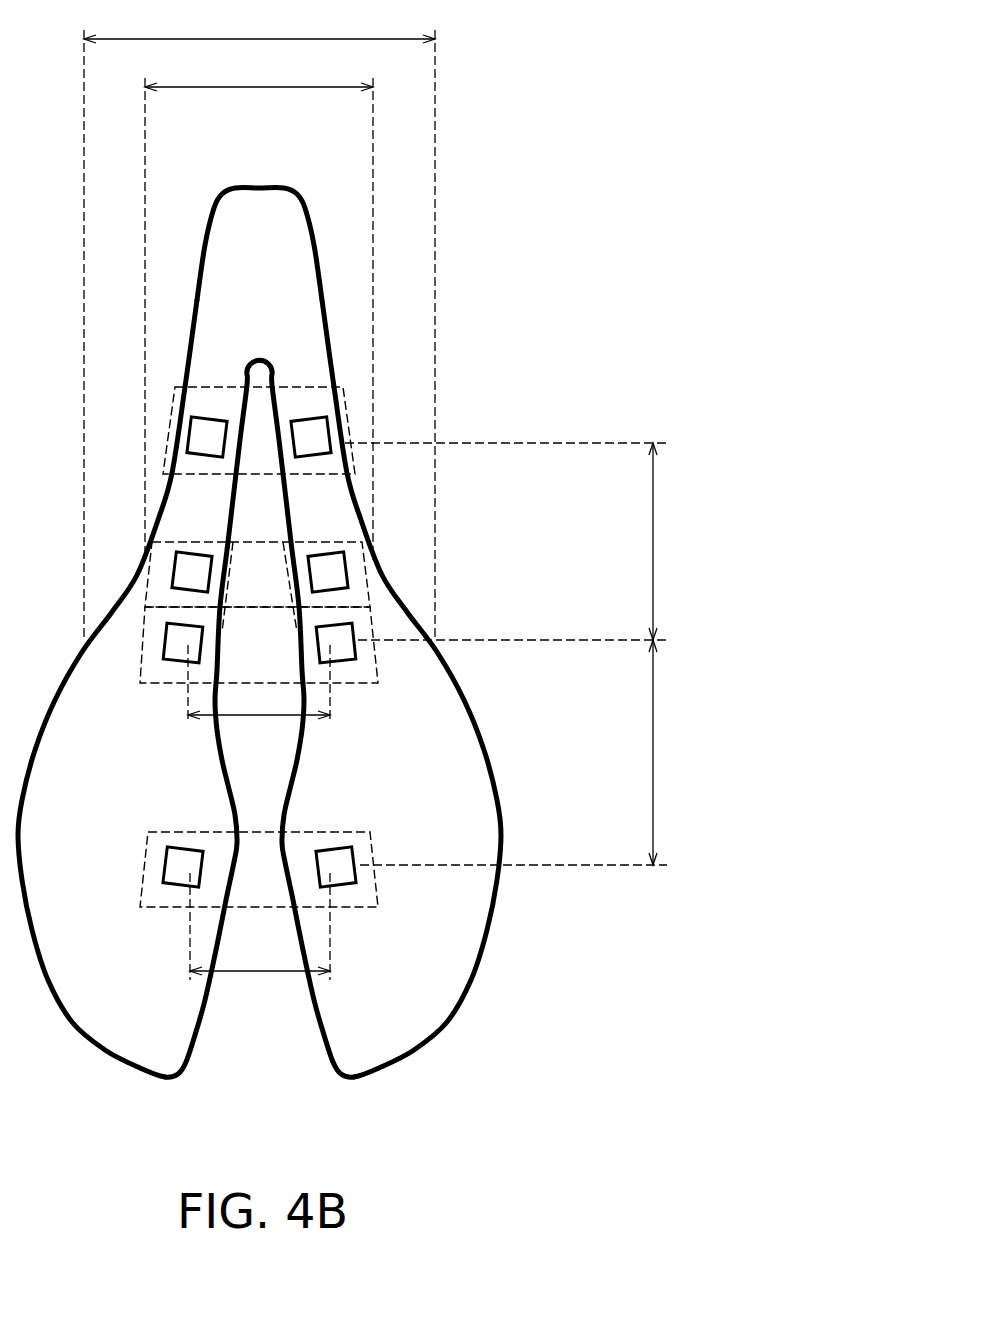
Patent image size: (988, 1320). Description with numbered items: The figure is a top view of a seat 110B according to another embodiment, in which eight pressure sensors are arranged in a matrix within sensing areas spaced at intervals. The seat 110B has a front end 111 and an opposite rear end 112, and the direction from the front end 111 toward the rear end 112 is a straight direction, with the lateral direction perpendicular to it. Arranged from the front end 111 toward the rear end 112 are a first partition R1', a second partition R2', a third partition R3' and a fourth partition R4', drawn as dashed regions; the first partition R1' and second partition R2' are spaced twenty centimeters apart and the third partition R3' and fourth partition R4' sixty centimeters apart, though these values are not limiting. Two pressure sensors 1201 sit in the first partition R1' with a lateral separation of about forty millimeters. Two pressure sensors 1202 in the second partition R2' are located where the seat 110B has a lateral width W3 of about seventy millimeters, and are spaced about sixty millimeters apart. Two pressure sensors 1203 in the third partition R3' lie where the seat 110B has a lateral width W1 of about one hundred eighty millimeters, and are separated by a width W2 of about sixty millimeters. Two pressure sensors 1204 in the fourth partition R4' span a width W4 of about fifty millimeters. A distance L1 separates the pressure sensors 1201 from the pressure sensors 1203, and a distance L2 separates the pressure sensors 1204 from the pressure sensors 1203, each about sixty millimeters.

The seat 110B is at (296, 623).
The front end 111 is at (255, 180).
The rear end 112 is at (300, 1075).
The pressure sensors 1201 is at (313, 430).
The pressure sensors 1202 is at (193, 560).
The pressure sensors 1203 is at (180, 653).
The pressure sensors 1204 is at (180, 873).
The first partition R1' is at (255, 384).
The second partition R2' is at (233, 577).
The third partition R3' is at (235, 666).
The fourth partition R4' is at (222, 869).
The lateral width W1 is at (259, 322).
The width W2 is at (259, 700).
The lateral width W3 is at (259, 306).
The width W4 is at (260, 940).
The distance L1 is at (516, 541).
The distance L2 is at (524, 752).